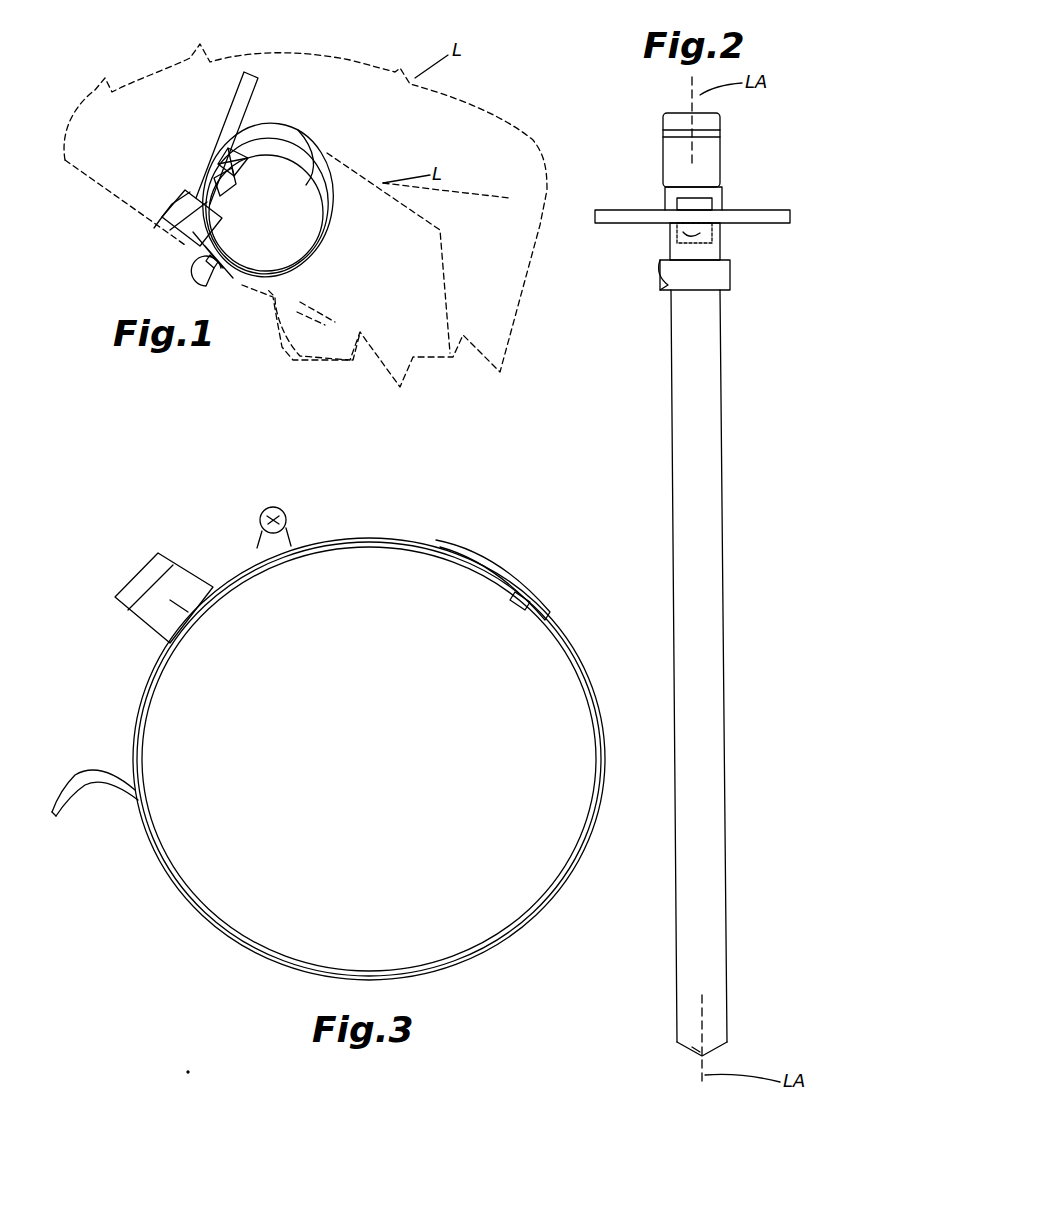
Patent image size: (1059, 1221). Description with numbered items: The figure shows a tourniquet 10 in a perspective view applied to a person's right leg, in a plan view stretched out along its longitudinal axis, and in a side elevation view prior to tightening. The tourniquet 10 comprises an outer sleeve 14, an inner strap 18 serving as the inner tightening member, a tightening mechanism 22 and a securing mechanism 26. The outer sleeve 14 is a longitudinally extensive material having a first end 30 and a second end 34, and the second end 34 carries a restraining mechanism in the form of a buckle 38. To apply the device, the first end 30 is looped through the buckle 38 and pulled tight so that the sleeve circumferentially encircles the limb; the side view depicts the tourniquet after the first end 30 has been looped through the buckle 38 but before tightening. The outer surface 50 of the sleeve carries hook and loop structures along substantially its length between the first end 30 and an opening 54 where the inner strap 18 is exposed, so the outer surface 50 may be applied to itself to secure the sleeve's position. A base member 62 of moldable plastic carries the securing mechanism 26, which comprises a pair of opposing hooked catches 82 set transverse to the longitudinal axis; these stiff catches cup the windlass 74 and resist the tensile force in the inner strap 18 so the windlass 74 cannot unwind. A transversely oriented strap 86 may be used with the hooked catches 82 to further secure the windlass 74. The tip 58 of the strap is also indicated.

In FIG. 1, the tourniquet 10 is at (332, 137).
In FIG. 2, the tourniquet 10 is at (622, 425).
In FIG. 3, the tourniquet 10 is at (176, 512).
In FIG. 1, the outer sleeve 14 is at (232, 232).
In FIG. 2, the outer sleeve 14 is at (724, 472).
In FIG. 3, the outer sleeve 14 is at (558, 603).
In FIG. 1, the inner strap 18 is at (226, 156).
In FIG. 2, the inner strap 18 is at (700, 229).
In FIG. 3, the inner strap 18 is at (286, 511).
In FIG. 1, the tightening mechanism 22 is at (258, 104).
In FIG. 3, the tightening mechanism 22 is at (266, 492).
In FIG. 1, the securing mechanism 26 is at (176, 172).
In FIG. 2, the securing mechanism 26 is at (736, 272).
In FIG. 3, the securing mechanism 26 is at (196, 570).
In FIG. 2, the first end 30 is at (675, 1010).
In FIG. 3, the first end 30 is at (86, 756).
In FIG. 2, the second end 34 is at (658, 141).
In FIG. 3, the second end 34 is at (504, 544).
In FIG. 1, the buckle 38 is at (298, 142).
In FIG. 2, the buckle 38 is at (664, 115).
In FIG. 3, the buckle 38 is at (497, 562).
In FIG. 1, the outer surface 50 is at (220, 276).
In FIG. 3, the outer surface 50 is at (520, 600).
In FIG. 2, the opening 54 is at (672, 230).
In FIG. 1, the tip of strap 58 is at (196, 280).
In FIG. 2, the tip of strap 58 is at (690, 1047).
In FIG. 3, the tip of strap 58 is at (63, 827).
In FIG. 1, the base member 62 is at (222, 195).
In FIG. 1, the windlass 74 is at (260, 92).
In FIG. 2, the windlass 74 is at (612, 210).
In FIG. 3, the windlass 74 is at (279, 508).
In FIG. 1, the hooked catches 82 is at (186, 195).
In FIG. 3, the hooked catches 82 is at (178, 604).
In FIG. 1, the transversely oriented strap 86 is at (172, 212).
In FIG. 2, the transversely oriented strap 86 is at (667, 272).
In FIG. 3, the transversely oriented strap 86 is at (145, 578).